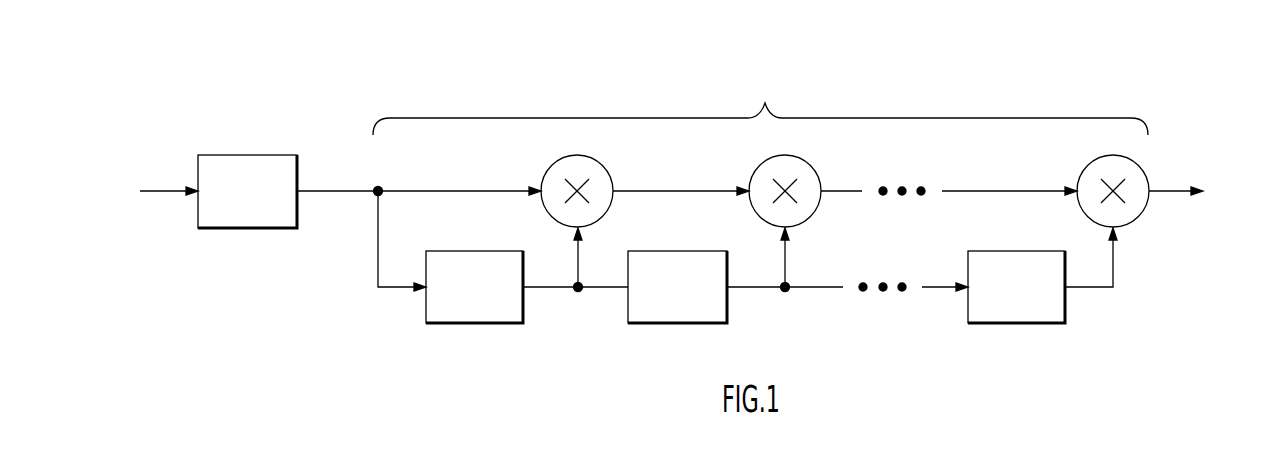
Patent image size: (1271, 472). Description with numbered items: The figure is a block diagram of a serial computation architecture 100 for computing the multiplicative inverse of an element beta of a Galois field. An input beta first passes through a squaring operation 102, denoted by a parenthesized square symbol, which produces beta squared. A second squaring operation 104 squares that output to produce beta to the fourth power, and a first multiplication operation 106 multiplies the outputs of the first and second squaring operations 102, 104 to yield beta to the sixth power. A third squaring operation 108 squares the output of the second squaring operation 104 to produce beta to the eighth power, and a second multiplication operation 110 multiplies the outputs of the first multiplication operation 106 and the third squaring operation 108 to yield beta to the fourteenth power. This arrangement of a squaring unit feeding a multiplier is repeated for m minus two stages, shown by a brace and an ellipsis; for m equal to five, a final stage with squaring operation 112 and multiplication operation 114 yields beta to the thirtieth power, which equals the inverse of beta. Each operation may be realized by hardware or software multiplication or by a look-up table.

The serial computation architecture 100 is at (1176, 80).
The squaring operation 102 is at (260, 155).
The second squaring operation 104 is at (473, 251).
The first multiplication operation 106 is at (603, 165).
The third squaring operation 108 is at (676, 251).
The second multiplication operation 110 is at (813, 167).
The squaring operation 112 is at (1003, 251).
The multiplication operation 114 is at (1141, 168).